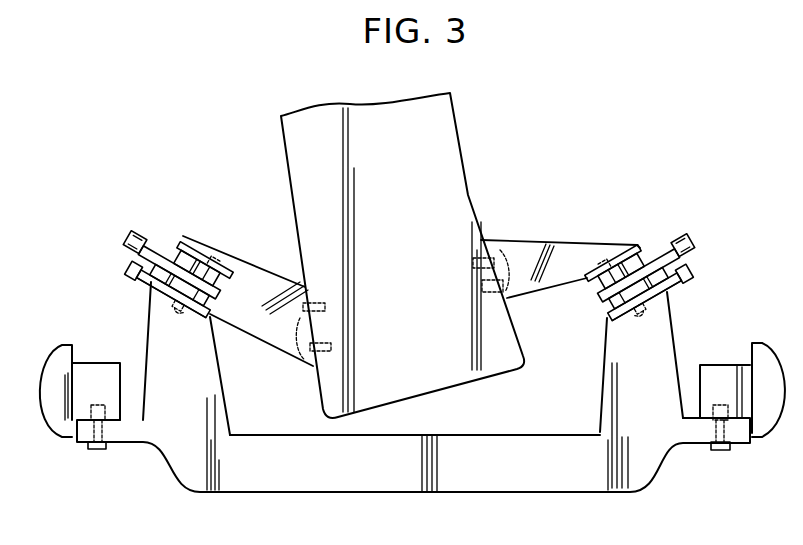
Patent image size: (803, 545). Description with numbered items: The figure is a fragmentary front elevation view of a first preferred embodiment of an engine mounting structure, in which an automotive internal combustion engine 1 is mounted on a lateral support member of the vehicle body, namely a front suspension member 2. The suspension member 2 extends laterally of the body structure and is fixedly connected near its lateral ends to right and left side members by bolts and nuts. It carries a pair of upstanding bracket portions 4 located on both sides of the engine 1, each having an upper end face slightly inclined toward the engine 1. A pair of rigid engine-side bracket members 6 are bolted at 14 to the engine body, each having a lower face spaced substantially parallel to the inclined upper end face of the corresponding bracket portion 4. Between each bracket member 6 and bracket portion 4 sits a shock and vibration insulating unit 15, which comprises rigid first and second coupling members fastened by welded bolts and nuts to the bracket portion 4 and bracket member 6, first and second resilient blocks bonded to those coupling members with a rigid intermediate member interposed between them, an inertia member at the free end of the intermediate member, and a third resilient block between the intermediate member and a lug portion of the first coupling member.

The internal combustion engine 1 is at (462, 153).
The front suspension member 2 is at (540, 500).
The bracket portion 4 is at (232, 409).
The engine-side bracket member 6 is at (286, 274).
The bolt 14 is at (303, 361).
The shock and vibration insulating unit 15 is at (150, 201).